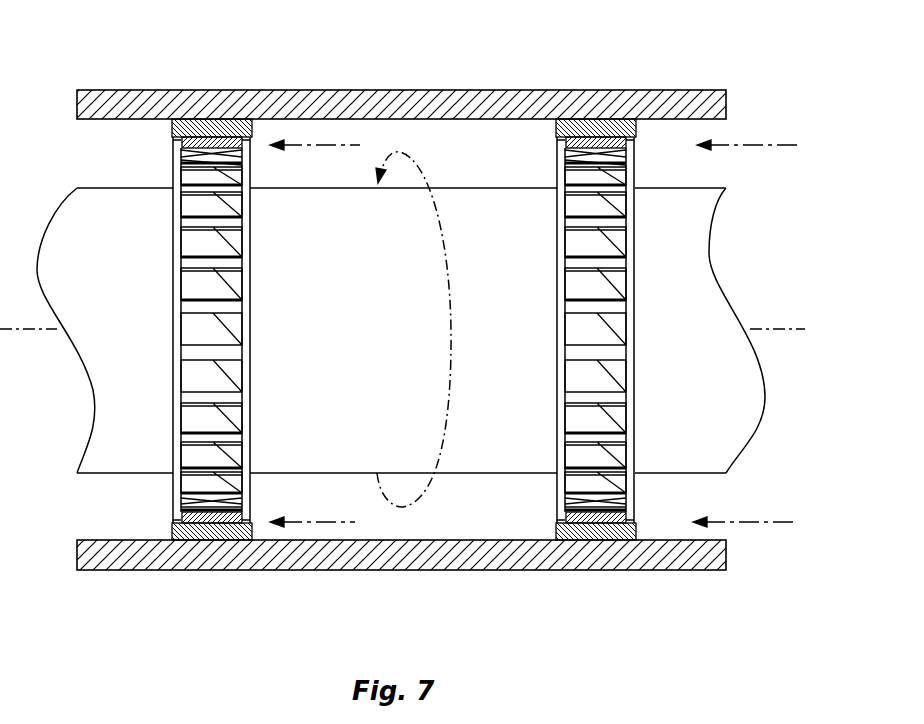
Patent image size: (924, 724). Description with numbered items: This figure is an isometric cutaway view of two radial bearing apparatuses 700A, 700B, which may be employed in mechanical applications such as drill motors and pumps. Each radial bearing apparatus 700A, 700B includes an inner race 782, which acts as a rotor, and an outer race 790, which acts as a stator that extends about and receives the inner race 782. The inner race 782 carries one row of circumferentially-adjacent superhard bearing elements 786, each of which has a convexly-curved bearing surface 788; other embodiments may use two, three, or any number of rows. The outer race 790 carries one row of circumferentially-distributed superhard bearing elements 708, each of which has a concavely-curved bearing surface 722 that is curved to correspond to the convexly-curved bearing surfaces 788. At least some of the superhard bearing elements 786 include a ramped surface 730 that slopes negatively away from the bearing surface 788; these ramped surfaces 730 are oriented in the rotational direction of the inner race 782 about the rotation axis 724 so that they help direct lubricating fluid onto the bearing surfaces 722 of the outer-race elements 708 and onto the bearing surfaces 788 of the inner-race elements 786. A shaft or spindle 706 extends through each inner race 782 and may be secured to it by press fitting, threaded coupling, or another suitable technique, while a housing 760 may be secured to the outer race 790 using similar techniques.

The radial bearing apparatus 700A is at (154, 520).
The radial bearing apparatus 700B is at (663, 526).
The shaft or spindle 706 is at (482, 452).
The superhard bearing element 708 is at (267, 90).
The concavely-curved bearing surface 722 is at (220, 137).
The rotation axis 724 is at (422, 329).
The ramped surface 730 is at (236, 242).
The housing 760 is at (340, 105).
The inner race 782 is at (168, 416).
The superhard bearing element 786 is at (250, 248).
The convexly-curved bearing surface 788 is at (232, 258).
The outer race 790 is at (213, 137).